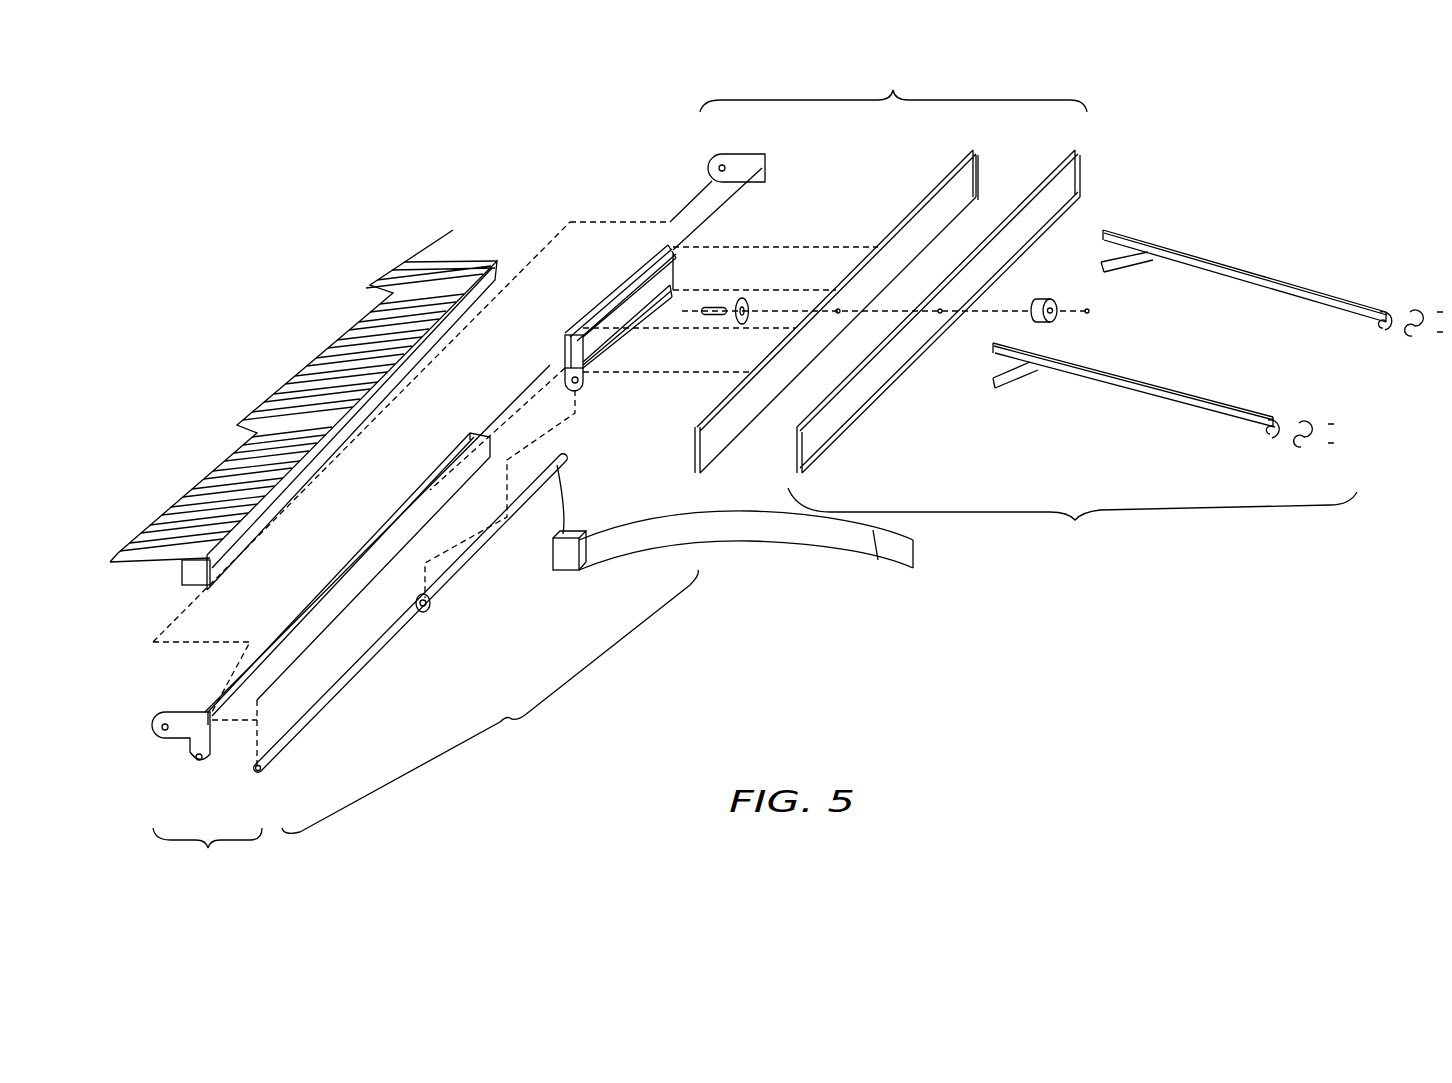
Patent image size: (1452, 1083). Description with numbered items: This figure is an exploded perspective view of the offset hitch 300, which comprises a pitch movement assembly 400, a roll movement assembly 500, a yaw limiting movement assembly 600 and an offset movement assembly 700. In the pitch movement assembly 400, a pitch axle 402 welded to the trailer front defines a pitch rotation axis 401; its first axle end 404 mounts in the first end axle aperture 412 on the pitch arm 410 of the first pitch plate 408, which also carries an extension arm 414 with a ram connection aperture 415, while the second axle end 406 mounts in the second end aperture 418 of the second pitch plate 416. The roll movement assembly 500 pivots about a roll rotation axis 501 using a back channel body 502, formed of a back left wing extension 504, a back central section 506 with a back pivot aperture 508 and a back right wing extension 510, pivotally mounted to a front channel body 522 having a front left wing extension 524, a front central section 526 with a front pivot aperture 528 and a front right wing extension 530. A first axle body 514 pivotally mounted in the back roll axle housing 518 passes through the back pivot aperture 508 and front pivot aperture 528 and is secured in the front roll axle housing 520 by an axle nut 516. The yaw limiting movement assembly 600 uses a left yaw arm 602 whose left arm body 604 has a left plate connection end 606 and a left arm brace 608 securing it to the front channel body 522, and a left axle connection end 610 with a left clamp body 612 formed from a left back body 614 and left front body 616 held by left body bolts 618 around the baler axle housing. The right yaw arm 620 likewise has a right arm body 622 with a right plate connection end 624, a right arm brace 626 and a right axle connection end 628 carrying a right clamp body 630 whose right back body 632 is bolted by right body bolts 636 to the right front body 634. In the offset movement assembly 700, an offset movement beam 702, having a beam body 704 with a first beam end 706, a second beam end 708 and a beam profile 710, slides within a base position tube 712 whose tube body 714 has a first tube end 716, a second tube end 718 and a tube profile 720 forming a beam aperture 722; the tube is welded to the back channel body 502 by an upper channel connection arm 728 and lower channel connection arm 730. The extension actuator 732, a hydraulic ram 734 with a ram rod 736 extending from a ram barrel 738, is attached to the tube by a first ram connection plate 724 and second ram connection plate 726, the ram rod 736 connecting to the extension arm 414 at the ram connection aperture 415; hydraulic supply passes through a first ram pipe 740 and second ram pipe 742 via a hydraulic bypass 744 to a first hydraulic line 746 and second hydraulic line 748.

The offset hitch 300 is at (1178, 93).
The pitch movement assembly 400 is at (208, 848).
The pitch rotation axis 401 is at (178, 612).
The pitch axle 402 is at (288, 516).
The first axle end 404 is at (212, 589).
The second axle end 406 is at (490, 312).
The first pitch plate 408 is at (163, 712).
The pitch arm 410 is at (156, 722).
The first end axle aperture 412 is at (160, 736).
The extension arm 414 is at (193, 761).
The ram connection aperture 415 is at (204, 766).
The second pitch plate 416 is at (725, 157).
The second end aperture 418 is at (708, 165).
The roll movement assembly 500 is at (893, 90).
The roll rotation axis 501 is at (1013, 310).
The back channel body 502 is at (909, 213).
The back left wing extension 504 is at (704, 476).
The back central section 506 is at (915, 295).
The back pivot aperture 508 is at (838, 316).
The back right wing extension 510 is at (978, 207).
The first axle body 514 is at (722, 306).
The axle nut 516 is at (1092, 313).
The back roll axle housing 518 is at (746, 300).
The front roll axle housing 520 is at (1052, 300).
The front channel body 522 is at (860, 423).
The front left wing extension 524 is at (818, 463).
The front central section 526 is at (920, 360).
The front pivot aperture 528 is at (942, 316).
The front right wing extension 530 is at (1098, 152).
The yaw limiting movement assembly 600 is at (1075, 520).
The left yaw arm 602 is at (1172, 383).
The left arm body 604 is at (1108, 388).
The left plate connection end 606 is at (1030, 350).
The left arm brace 608 is at (1003, 388).
The left axle connection end 610 is at (1270, 430).
The left clamp body 612 is at (1260, 445).
The left back body 614 is at (1266, 448).
The left front body 616 is at (1308, 445).
The left body bolts 618 is at (1334, 424).
The right yaw arm 620 is at (1277, 281).
The right arm body 622 is at (1238, 272).
The right plate connection end 624 is at (1110, 230).
The right arm brace 626 is at (1125, 272).
The right axle connection end 628 is at (1370, 305).
The right clamp body 630 is at (1370, 332).
The right back body 632 is at (1372, 345).
The right front body 634 is at (1418, 335).
The right body bolts 636 is at (1440, 305).
The offset movement assembly 700 is at (508, 718).
The offset movement beam 702 is at (375, 522).
The beam body 704 is at (328, 627).
The first beam end 706 is at (209, 708).
The second beam end 708 is at (448, 456).
The beam profile 710 is at (215, 720).
The base position tube 712 is at (595, 306).
The tube body 714 is at (619, 284).
The first tube end 716 is at (565, 328).
The second tube end 718 is at (645, 258).
The tube profile 720 is at (565, 350).
The beam aperture 722 is at (565, 370).
The first ram connection plate 724 is at (580, 390).
The second ram connection plate 726 is at (682, 292).
The upper channel connection arm 728 is at (625, 320).
The lower channel connection arm 730 is at (620, 350).
The extension actuator 732 is at (443, 609).
The hydraulic ram 734 is at (430, 615).
The ram rod 736 is at (338, 697).
The ram barrel 738 is at (553, 555).
The first ram pipe 740 is at (523, 580).
The second ram pipe 742 is at (570, 520).
The hydraulic bypass 744 is at (582, 568).
The first hydraulic line 746 is at (776, 545).
The second hydraulic line 748 is at (876, 548).